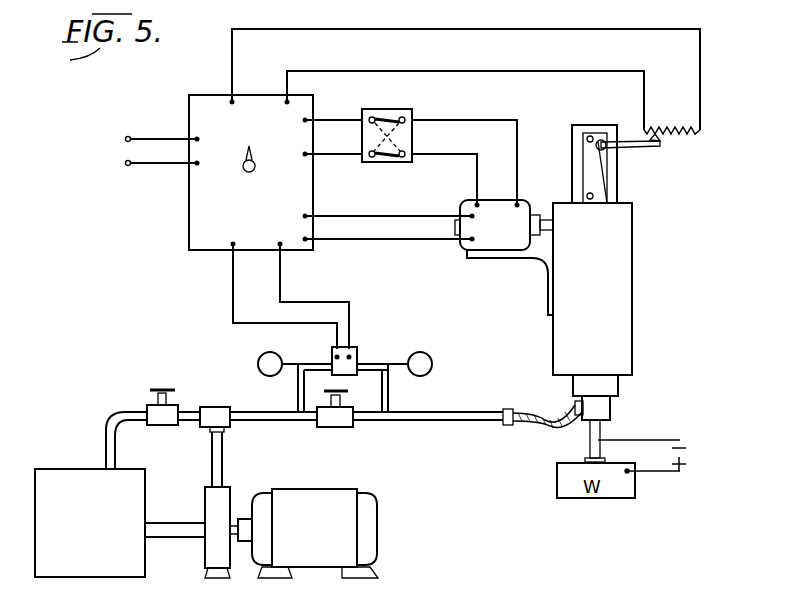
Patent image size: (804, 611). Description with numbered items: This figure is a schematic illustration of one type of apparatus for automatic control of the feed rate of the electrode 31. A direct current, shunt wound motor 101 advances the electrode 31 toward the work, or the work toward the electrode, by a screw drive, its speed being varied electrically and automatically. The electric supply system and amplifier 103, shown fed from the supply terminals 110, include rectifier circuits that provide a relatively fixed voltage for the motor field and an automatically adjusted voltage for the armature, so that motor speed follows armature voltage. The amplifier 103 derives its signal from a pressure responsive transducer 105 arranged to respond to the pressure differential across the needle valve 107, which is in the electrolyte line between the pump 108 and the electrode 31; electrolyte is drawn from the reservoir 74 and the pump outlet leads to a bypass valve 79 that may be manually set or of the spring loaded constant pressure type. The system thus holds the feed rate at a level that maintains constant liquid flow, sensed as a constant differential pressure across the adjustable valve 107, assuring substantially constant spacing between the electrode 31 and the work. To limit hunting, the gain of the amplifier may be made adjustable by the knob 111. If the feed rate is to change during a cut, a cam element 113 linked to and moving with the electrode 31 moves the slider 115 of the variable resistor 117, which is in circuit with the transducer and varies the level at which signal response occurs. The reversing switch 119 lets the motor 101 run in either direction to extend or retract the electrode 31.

The amplifier 103 is at (272, 127).
The knob 111 is at (255, 167).
The 110 volt supply 110 is at (139, 151).
The reversing switch 119 is at (382, 163).
The variable resistor 117 is at (688, 108).
The cam element 113 is at (590, 167).
The slider 115 is at (661, 146).
The motor 101 is at (500, 253).
The pressure responsive transducer 105 is at (357, 357).
The needle valve 107 is at (336, 428).
The bypass valve 79 is at (166, 387).
The reservoir 74 is at (60, 470).
The pump 108 is at (214, 547).
The electrode 31 is at (590, 428).